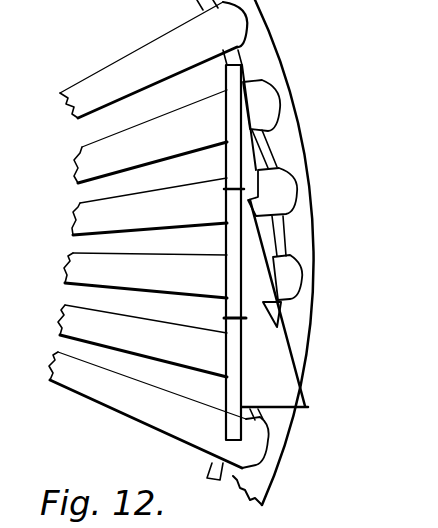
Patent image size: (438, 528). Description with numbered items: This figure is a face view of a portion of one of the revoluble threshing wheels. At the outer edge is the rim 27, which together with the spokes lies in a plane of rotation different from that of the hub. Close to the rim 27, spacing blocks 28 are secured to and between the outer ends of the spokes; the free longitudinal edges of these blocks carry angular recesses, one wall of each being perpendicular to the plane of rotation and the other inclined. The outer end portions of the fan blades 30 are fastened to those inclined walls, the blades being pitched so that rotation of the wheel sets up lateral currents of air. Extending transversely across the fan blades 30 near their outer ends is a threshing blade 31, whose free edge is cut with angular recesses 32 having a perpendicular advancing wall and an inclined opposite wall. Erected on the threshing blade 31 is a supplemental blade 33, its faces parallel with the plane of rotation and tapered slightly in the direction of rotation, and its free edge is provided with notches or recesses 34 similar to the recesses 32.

The rim 27 is at (273, 448).
The spacing block 28 is at (210, 470).
The fan blade 30 is at (264, 108).
The threshing blade 31 is at (233, 397).
The angular recess 32 is at (246, 320).
The supplemental blade 33 is at (292, 393).
The notch or recess 34 is at (250, 203).